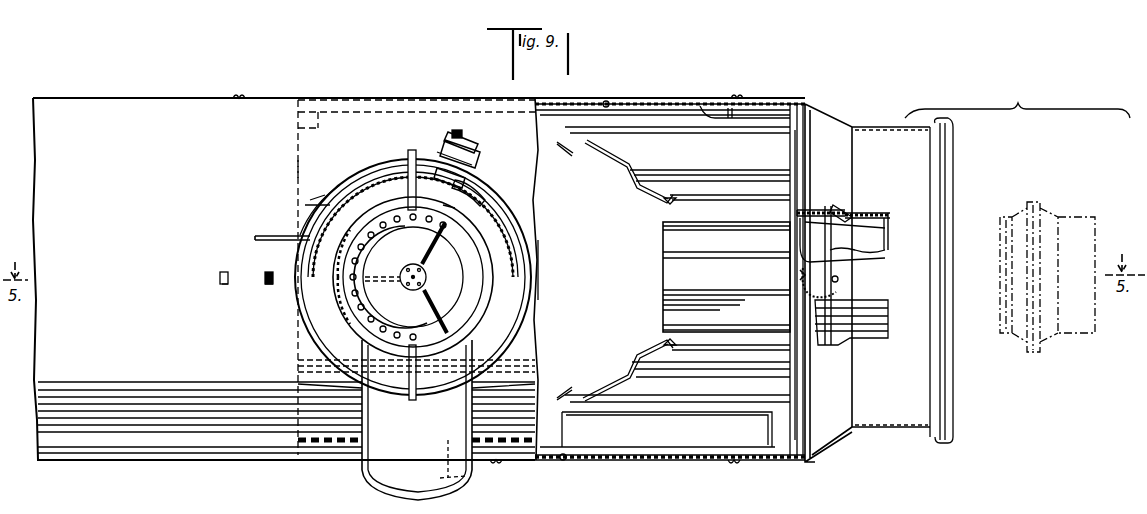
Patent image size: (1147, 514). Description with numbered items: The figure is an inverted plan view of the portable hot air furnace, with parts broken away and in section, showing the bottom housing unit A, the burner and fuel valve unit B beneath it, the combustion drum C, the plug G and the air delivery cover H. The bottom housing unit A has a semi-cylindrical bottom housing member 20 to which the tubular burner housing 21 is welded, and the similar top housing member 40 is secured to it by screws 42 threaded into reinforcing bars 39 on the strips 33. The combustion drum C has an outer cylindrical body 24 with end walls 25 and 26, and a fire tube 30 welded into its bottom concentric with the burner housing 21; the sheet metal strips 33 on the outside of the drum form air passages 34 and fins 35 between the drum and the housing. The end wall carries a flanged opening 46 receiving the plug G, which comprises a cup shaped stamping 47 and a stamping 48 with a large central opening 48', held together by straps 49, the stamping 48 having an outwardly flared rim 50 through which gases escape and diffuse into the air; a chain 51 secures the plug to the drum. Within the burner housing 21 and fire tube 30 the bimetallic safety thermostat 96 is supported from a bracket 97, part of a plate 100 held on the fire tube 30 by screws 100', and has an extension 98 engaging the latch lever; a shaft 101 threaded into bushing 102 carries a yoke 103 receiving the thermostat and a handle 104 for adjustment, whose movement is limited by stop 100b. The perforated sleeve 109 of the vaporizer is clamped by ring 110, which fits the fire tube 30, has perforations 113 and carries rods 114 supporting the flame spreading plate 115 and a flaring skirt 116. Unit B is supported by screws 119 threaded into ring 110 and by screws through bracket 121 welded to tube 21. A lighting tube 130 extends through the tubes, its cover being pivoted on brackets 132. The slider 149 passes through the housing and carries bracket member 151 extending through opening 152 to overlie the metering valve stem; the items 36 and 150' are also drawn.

The bottom housing member 20 is at (95, 110).
The tubular burner housing 21 is at (540, 272).
The outer cylindrical body 24 is at (698, 279).
The end wall 25 is at (298, 168).
The end wall 26 is at (806, 160).
The fire tube 30 is at (483, 236).
The sheet metal strips 33 is at (800, 104).
The air passages 34 is at (602, 165).
The fins 35 is at (664, 200).
The bottom plate 36 is at (657, 462).
The reinforcing bars 39 is at (710, 108).
The top housing member 40 is at (605, 102).
The screws 42 is at (240, 98).
The opening 46 is at (800, 210).
The cup shaped stamping 47 is at (810, 238).
The stamping 48 is at (880, 215).
The central opening 48' is at (876, 230).
The straps 49 is at (852, 216).
The outwardly flared rim 50 is at (834, 210).
The chain 51 is at (838, 296).
The thermostat 96 is at (356, 203).
The bracket 97 is at (492, 198).
The extension 98 is at (265, 233).
The plate 100 is at (413, 268).
The screws 100' is at (341, 179).
The stop 100b is at (466, 158).
The shaft 101 is at (460, 142).
The bushing 102 is at (466, 177).
The yoke 103 is at (448, 212).
The handle 104 is at (450, 140).
The perforated sleeve 109 is at (352, 262).
The ring 110 is at (406, 228).
The perforations 113 is at (362, 308).
The rods 114 is at (440, 244).
The flame spreading plate 115 is at (426, 282).
The skirt 116 is at (348, 287).
The screws 119 is at (421, 150).
The bracket 121 is at (456, 482).
The lighting tube 130 is at (455, 462).
The brackets 132 is at (350, 456).
The slider 149 is at (269, 288).
The contact 150' is at (270, 262).
The bracket member 151 is at (226, 288).
The opening 152 is at (224, 272).
The bottom housing unit A is at (169, 89).
The burner and fuel valve unit B is at (324, 182).
The combustion drum C is at (809, 390).
The plug G is at (871, 346).
The air delivery cover H is at (971, 376).